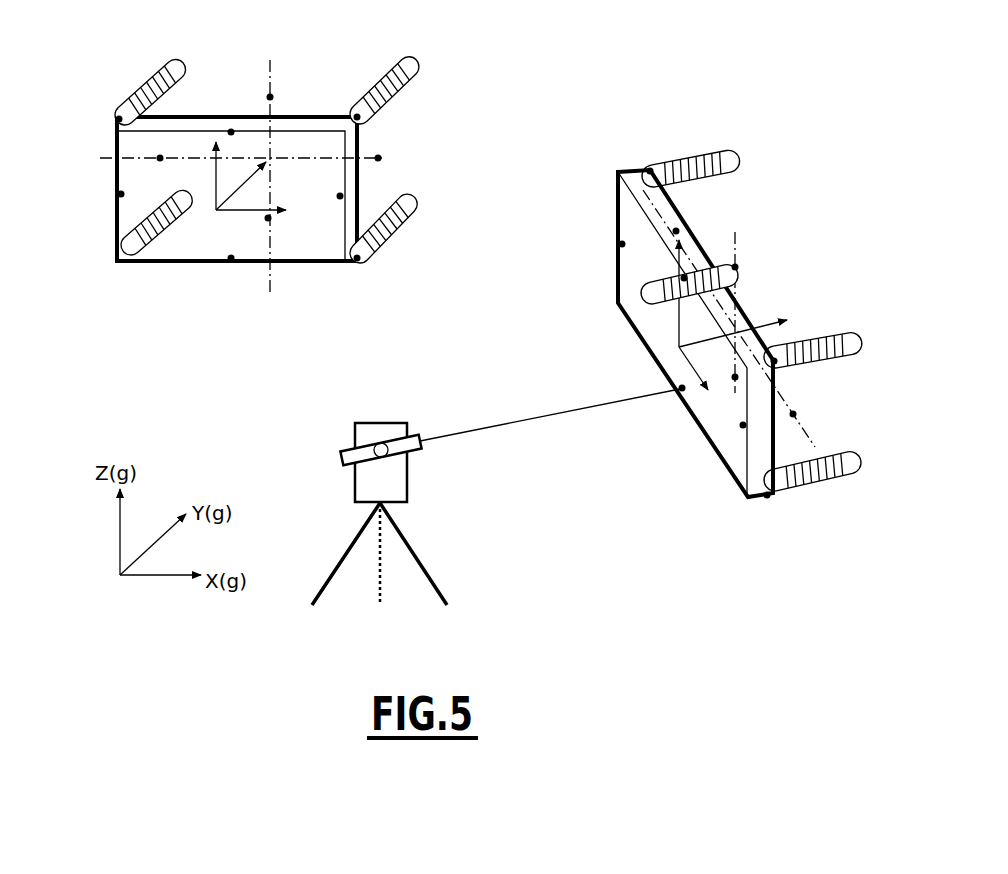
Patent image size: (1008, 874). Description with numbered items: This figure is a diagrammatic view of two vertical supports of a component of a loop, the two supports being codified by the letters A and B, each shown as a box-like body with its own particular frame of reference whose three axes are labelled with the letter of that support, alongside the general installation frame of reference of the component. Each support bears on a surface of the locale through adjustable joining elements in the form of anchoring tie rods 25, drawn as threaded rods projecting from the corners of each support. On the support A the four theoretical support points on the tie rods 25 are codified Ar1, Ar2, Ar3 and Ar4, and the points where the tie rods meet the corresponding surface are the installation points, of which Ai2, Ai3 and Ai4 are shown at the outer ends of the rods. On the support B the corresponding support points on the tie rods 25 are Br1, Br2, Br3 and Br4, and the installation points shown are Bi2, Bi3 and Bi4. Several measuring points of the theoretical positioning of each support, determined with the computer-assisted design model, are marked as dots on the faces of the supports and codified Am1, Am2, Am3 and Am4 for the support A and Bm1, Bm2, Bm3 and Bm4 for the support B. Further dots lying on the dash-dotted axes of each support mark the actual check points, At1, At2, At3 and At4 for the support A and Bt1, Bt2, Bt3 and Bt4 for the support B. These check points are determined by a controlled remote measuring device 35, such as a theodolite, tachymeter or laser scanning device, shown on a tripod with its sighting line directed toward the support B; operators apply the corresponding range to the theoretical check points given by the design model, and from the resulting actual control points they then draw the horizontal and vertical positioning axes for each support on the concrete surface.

The support A is at (110, 167).
The support B is at (613, 167).
The tie rod 25 is at (468, 276).
The controlled remote measuring device 35 is at (401, 487).
The installation point of tie rod of support A Ai4 is at (183, 60).
The installation point of tie rod of support A Ai3 is at (412, 66).
The installation point of tie rod of support A Ai2 is at (410, 205).
The support point of support A on tie rod Ar1 is at (121, 251).
The support point of support A on tie rod Ar2 is at (358, 260).
The support point of support A on tie rod Ar3 is at (360, 120).
The support point of support A on tie rod Ar4 is at (120, 118).
The position measuring point of support A Am1 is at (118, 194).
The position measuring point of support A Am2 is at (231, 261).
The position measuring point of support A Am3 is at (343, 196).
The position measuring point of support A Am4 is at (231, 129).
The check point of support A At1 is at (159, 161).
The check point of support A At2 is at (269, 221).
The check point of support A At3 is at (381, 158).
The check point of support A At4 is at (271, 94).
The installation point of tie rod of support B Bi4 is at (742, 150).
The installation point of tie rod of support B Bi3 is at (862, 340).
The installation point of tie rod of support B Bi2 is at (865, 472).
The support point of support B on tie rod Br1 is at (650, 296).
The support point of support B on tie rod Br2 is at (767, 499).
The support point of support B on tie rod Br3 is at (776, 364).
The support point of support B on tie rod Br4 is at (650, 168).
The position measuring point of support B Bm1 is at (619, 244).
The position measuring point of support B Bm2 is at (682, 391).
The position measuring point of support B Bm3 is at (743, 428).
The position measuring point of support B Bm4 is at (681, 278).
The check point of support B Bt1 is at (673, 230).
The check point of support B Bt2 is at (732, 377).
The check point of support B Bt3 is at (796, 415).
The check point of support B Bt4 is at (736, 264).